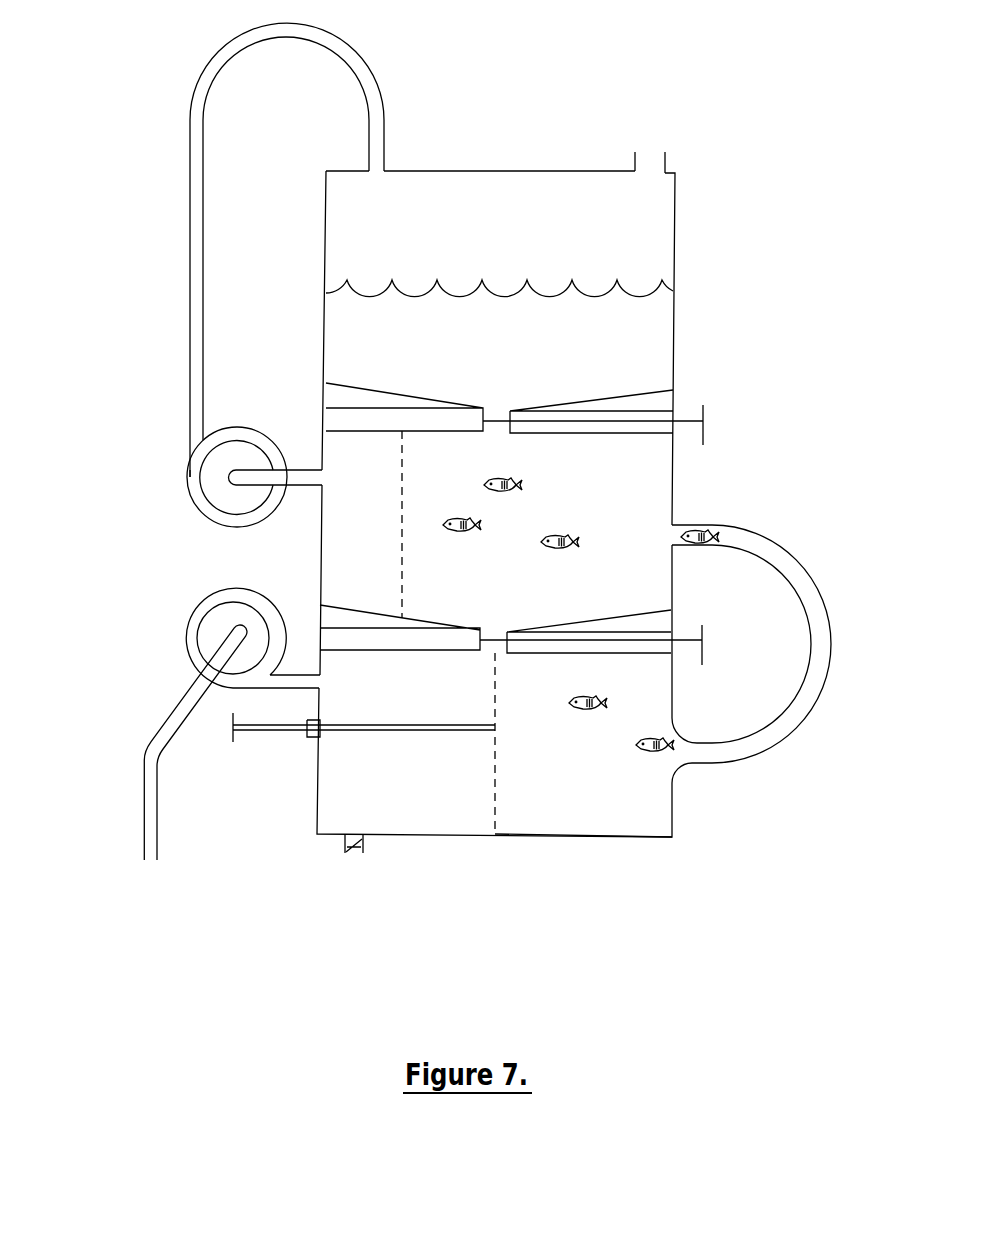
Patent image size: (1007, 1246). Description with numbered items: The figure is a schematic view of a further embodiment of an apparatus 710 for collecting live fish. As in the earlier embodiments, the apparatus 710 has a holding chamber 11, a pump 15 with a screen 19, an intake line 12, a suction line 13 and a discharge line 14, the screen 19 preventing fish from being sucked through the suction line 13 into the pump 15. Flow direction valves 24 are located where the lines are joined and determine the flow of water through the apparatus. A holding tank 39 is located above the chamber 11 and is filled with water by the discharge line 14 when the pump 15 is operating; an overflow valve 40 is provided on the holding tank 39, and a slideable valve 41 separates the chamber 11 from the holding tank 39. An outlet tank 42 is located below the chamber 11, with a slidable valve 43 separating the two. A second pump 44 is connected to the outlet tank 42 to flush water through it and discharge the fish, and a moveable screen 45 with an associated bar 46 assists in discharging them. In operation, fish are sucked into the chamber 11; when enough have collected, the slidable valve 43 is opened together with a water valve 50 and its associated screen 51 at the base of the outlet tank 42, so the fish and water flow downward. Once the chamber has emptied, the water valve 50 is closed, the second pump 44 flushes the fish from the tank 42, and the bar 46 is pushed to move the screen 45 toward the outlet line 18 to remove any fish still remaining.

The holding chamber 11 is at (630, 478).
The intake line 12 is at (785, 572).
The suction line 13 is at (299, 467).
The discharge line 14 is at (200, 98).
The pump 15 is at (186, 477).
The outlet line 18 is at (745, 743).
The screen 19 is at (400, 560).
The flow direction valve 24 is at (298, 483).
The holding tank 39 is at (655, 257).
The overflow valve 40 is at (649, 163).
The slideable valve 41 is at (507, 420).
The outlet tank 42 is at (615, 805).
The slidable valve 43 is at (610, 643).
The second pump 44 is at (187, 640).
The moveable screen 45 is at (493, 817).
The bar 46 is at (268, 732).
The water valve 50 is at (357, 850).
The screen 51 is at (345, 850).
The apparatus 710 is at (720, 140).